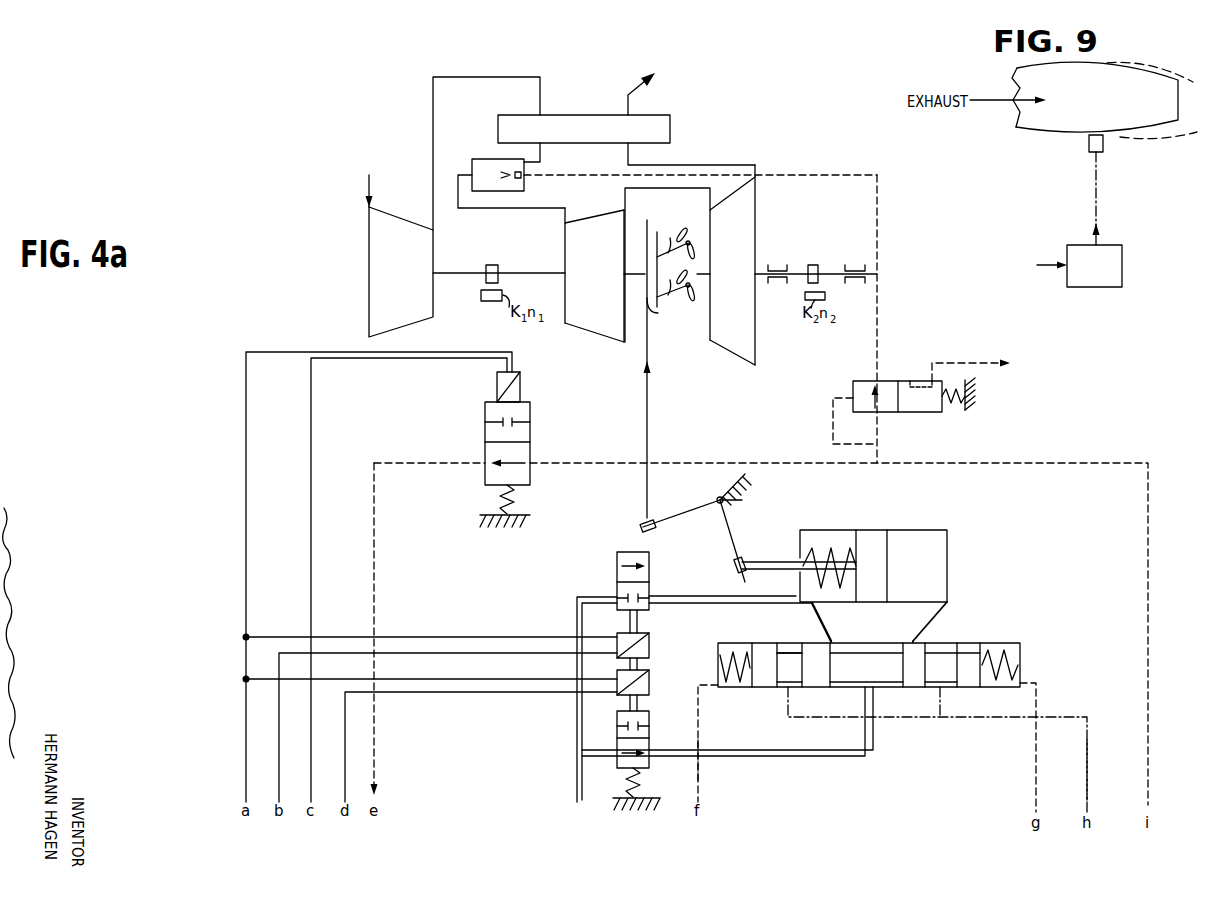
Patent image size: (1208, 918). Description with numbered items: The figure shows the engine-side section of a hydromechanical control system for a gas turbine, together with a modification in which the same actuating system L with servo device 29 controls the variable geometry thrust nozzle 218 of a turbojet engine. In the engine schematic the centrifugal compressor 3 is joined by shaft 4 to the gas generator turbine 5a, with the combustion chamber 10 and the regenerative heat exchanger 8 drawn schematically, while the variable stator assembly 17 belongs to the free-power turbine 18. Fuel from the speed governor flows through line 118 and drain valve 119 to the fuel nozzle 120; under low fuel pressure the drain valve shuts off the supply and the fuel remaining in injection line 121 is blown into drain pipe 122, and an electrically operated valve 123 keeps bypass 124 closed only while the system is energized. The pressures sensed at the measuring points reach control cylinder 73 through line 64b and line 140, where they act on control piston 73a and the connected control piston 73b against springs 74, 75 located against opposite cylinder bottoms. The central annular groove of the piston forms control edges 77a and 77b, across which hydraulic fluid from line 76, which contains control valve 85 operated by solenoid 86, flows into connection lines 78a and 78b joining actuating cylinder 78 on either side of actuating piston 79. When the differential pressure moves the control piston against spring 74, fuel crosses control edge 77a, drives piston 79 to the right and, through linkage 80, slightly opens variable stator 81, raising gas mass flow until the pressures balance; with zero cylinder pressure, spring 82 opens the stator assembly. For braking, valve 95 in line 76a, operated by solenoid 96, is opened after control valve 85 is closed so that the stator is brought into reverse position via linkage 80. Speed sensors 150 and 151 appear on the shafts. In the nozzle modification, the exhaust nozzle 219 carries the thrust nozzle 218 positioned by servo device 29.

In FIG. 4A, the compressor 3 is at (369, 268).
In FIG. 4A, the shaft 4 is at (458, 276).
In FIG. 4A, the gas generator turbine 5a is at (588, 325).
In FIG. 4A, the regenerative heat exchanger 8 is at (558, 120).
In FIG. 4A, the combustion chamber 10 is at (480, 160).
In FIG. 4A, the variable stator assembly 17 is at (697, 230).
In FIG. 4A, the free-power turbine 18 is at (750, 214).
In FIG. 9, the servo device 29 is at (1079, 219).
In FIG. 4A, the line 64b is at (1088, 770).
In FIG. 4A, the control cylinder 73 is at (945, 643).
In FIG. 4A, the control piston 73a is at (765, 684).
In FIG. 4A, the control piston 73b is at (972, 684).
In FIG. 4A, the spring 74 is at (741, 681).
In FIG. 4A, the spring 75 is at (1003, 646).
In FIG. 4A, the line 76 is at (785, 758).
In FIG. 4A, the line 76a is at (577, 614).
In FIG. 4A, the control edge 77a is at (832, 640).
In FIG. 4A, the control edge 77b is at (906, 640).
In FIG. 4A, the actuating cylinder 78 is at (910, 540).
In FIG. 4A, the connection line 78a is at (812, 611).
In FIG. 4A, the connection line 78b is at (938, 616).
In FIG. 4A, the actuating piston 79 is at (869, 540).
In FIG. 4A, the linkage 80 is at (649, 419).
In FIG. 4A, the variable stator 81 is at (667, 265).
In FIG. 4A, the spring 82 is at (813, 545).
In FIG. 4A, the control valve 85 is at (650, 734).
In FIG. 4A, the solenoid 86 is at (650, 689).
In FIG. 4A, the valve 95 is at (617, 560).
In FIG. 4A, the solenoid 96 is at (650, 649).
In FIG. 4A, the line 118 is at (1044, 462).
In FIG. 4A, the drain valve 119 is at (916, 407).
In FIG. 4A, the fuel nozzle 120 is at (522, 178).
In FIG. 4A, the injection line 121 is at (878, 350).
In FIG. 4A, the drain pipe 122 is at (988, 368).
In FIG. 4A, the electrically operated valve 123 is at (527, 456).
In FIG. 4A, the bypass 124 is at (451, 462).
In FIG. 4A, the line 140 is at (700, 748).
In FIG. 4A, the speed sensor K1 n1 150 is at (500, 302).
In FIG. 4A, the speed sensor K2 n2 151 is at (817, 318).
In FIG. 9, the variable geometry thrust nozzle 218 is at (1104, 148).
In FIG. 9, the exhaust nozzle 219 is at (1053, 133).